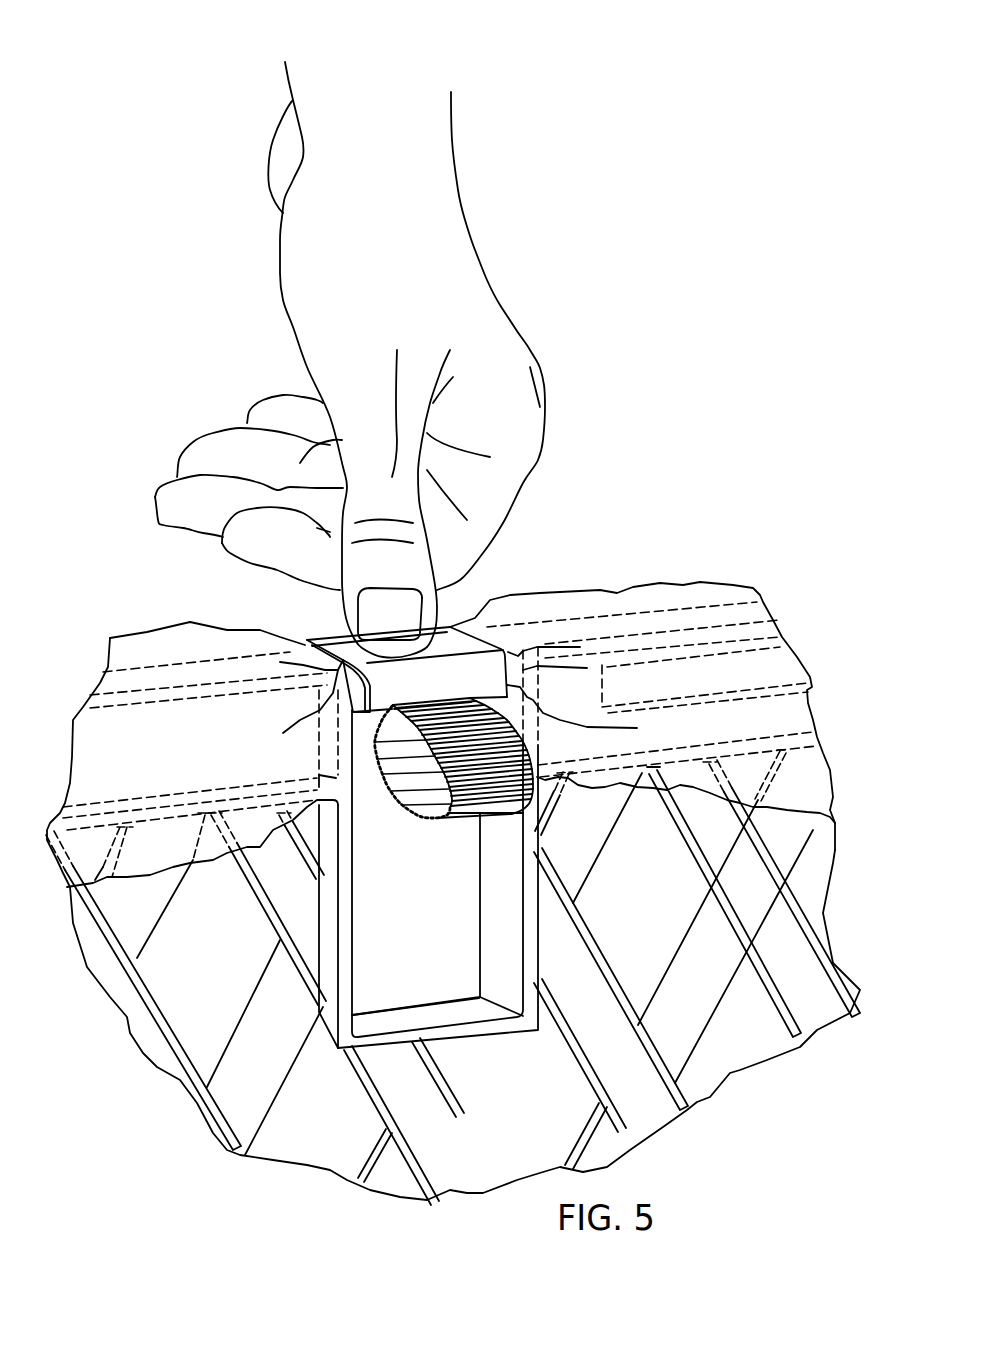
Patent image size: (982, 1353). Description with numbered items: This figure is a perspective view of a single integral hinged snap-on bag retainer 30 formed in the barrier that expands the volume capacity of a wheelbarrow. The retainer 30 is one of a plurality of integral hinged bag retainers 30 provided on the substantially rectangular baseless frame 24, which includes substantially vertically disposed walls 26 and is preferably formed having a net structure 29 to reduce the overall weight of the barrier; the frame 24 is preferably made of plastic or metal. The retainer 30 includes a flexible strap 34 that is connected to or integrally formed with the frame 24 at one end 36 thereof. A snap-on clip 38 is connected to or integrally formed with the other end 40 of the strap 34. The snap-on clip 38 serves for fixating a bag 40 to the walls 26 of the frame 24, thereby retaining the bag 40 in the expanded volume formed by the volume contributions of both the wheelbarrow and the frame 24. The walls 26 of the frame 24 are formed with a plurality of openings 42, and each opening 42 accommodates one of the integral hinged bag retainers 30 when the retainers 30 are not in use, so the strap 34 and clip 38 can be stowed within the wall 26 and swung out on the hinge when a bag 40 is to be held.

The baseless frame 24 is at (725, 670).
The walls 26 is at (453, 977).
The net structure 29 is at (808, 983).
The integral hinged bag retainer 30 is at (423, 847).
The flexible strap 34 is at (485, 781).
The one end 36 is at (402, 755).
The snap-on clip 38 is at (476, 662).
The bag 40 is at (678, 595).
The opening 42 is at (457, 885).